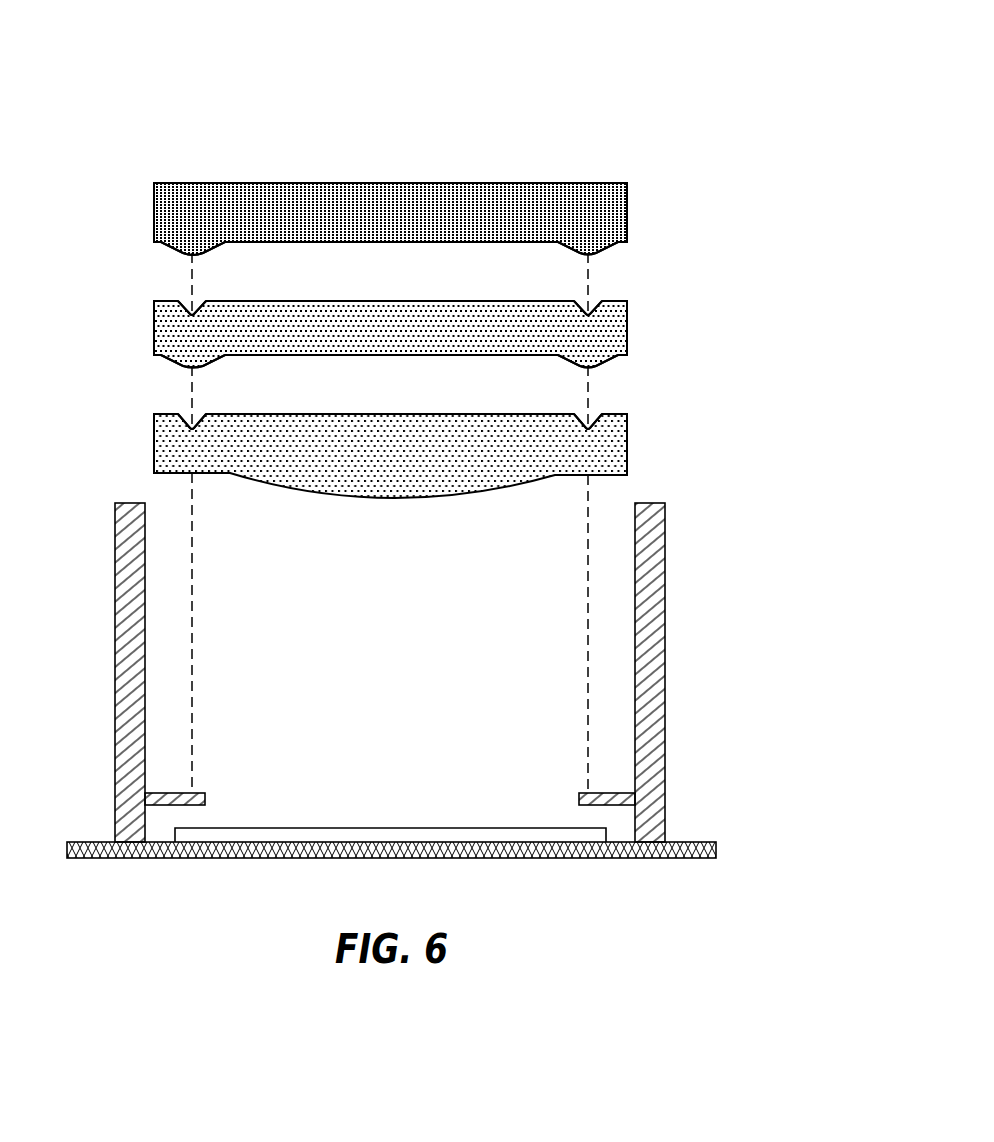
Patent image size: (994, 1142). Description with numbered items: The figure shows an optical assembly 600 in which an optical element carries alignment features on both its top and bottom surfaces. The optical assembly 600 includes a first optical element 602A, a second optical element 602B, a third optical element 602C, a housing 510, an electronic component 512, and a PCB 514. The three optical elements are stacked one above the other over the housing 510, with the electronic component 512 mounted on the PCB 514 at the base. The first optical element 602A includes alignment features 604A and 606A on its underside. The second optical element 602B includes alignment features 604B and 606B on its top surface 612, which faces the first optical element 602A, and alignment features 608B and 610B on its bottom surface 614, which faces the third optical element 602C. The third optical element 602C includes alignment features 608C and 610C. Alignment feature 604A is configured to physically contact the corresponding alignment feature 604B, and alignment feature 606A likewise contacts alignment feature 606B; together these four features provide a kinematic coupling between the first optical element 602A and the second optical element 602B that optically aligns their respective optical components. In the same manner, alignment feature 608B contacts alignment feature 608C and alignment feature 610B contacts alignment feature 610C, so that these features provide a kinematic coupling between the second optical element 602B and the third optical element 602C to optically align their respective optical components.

The optical assembly 600 is at (750, 89).
The first optical element 602A is at (620, 217).
The second optical element 602B is at (623, 335).
The third optical element 602C is at (623, 463).
The alignment feature 604A is at (595, 250).
The alignment feature 604B is at (588, 313).
The alignment feature 606A is at (185, 253).
The alignment feature 606B is at (192, 313).
The alignment feature 608B is at (597, 365).
The alignment feature 608C is at (588, 427).
The alignment feature 610B is at (188, 365).
The alignment feature 610C is at (192, 426).
The top surface 612 is at (369, 301).
The bottom surface 614 is at (369, 355).
The housing 510 is at (665, 750).
The electronic component 512 is at (330, 833).
The PCB 514 is at (716, 848).